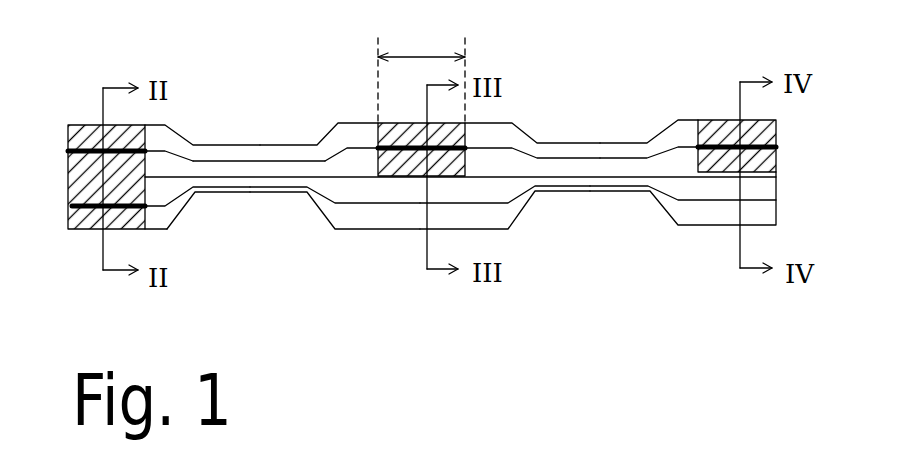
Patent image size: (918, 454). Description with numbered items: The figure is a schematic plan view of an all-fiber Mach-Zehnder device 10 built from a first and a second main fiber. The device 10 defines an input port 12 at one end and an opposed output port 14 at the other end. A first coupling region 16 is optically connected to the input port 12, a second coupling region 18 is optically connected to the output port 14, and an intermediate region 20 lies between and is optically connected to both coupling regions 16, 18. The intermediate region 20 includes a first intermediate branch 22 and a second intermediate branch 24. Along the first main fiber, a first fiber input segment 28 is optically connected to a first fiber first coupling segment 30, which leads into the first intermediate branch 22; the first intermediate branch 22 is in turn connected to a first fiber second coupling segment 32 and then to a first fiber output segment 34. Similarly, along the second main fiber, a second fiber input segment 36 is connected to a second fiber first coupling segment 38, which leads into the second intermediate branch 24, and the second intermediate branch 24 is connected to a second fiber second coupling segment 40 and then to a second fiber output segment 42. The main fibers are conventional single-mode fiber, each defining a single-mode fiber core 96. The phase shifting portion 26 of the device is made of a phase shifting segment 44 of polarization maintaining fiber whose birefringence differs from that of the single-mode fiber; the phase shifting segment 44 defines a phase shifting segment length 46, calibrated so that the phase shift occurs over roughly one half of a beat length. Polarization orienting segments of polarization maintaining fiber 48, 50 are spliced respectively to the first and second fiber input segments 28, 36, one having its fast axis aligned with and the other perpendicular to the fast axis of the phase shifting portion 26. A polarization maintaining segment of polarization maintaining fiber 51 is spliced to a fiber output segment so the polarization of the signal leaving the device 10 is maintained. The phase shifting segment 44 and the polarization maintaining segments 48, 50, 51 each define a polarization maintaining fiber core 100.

The Mach-Zehnder device 10 is at (672, 73).
The input port 12 is at (180, 228).
The output port 14 is at (660, 224).
The first coupling region 16 is at (247, 100).
The second coupling region 18 is at (623, 97).
The intermediate region 20 is at (480, 234).
The first intermediate branch 22 is at (488, 160).
The second intermediate branch 24 is at (390, 190).
The phase shifting portion 26 is at (473, 133).
The first fiber input segment 28 is at (156, 136).
The first fiber first coupling segment 30 is at (240, 152).
The first fiber second coupling segment 32 is at (587, 148).
The first fiber output segment 34 is at (687, 125).
The second fiber input segment 36 is at (155, 227).
The second fiber first coupling segment 38 is at (250, 192).
The second fiber second coupling segment 40 is at (583, 188).
The second fiber output segment 42 is at (715, 215).
The phase shifting segment 44 is at (370, 142).
The phase shifting segment length 46 is at (422, 56).
The polarization orienting segment of polarization maintaining fiber 48 is at (83, 125).
The polarization orienting segment of polarization maintaining fiber 50 is at (93, 222).
The polarization maintaining segment of polarization maintaining fiber 51 is at (772, 130).
The single-mode fiber core 96 is at (628, 158).
The polarization maintaining fiber core 100 is at (343, 146).